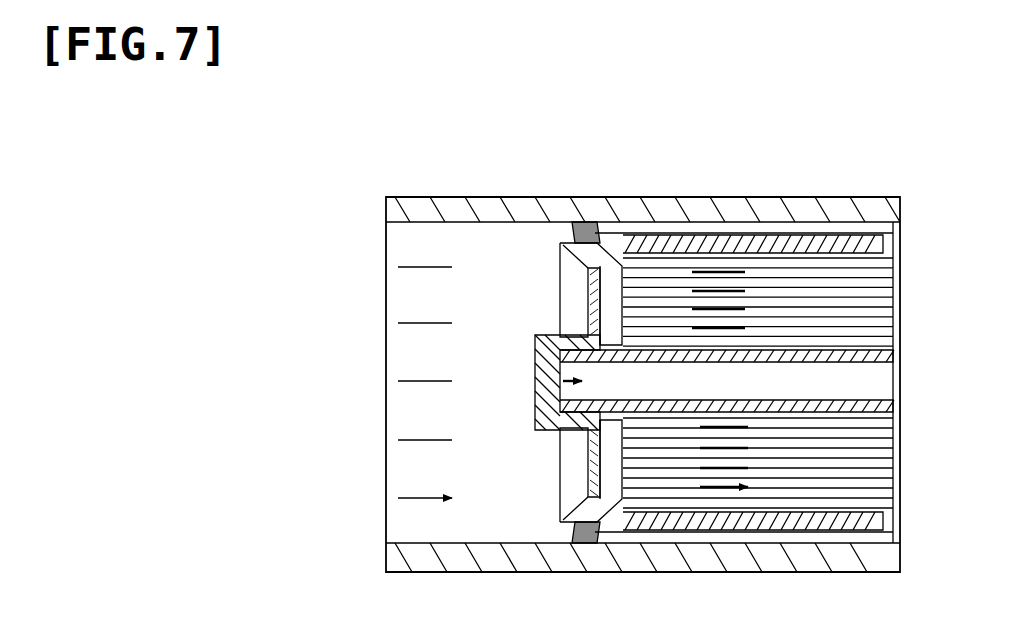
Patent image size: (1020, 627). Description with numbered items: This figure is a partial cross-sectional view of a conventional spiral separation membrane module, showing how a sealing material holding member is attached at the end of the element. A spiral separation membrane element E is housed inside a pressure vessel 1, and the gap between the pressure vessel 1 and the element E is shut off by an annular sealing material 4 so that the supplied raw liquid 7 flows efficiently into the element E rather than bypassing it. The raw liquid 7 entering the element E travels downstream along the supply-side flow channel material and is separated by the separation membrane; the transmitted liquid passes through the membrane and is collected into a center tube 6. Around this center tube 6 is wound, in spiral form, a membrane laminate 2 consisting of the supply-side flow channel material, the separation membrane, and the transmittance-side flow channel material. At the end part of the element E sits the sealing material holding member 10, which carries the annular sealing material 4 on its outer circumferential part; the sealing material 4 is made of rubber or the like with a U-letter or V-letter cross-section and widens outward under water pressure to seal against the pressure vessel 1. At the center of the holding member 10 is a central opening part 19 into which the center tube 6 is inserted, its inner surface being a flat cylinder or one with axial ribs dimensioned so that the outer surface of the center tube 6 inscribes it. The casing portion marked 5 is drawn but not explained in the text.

The pressure vessel 1 is at (487, 198).
The membrane laminate 2 is at (880, 290).
The annular sealing material 4 is at (602, 221).
The casing 5 is at (822, 234).
The center tube 6 is at (867, 362).
The raw liquid 7 is at (423, 267).
The sealing material holding member 10 is at (628, 243).
The central opening part 19 is at (536, 366).
The spiral separation membrane element E is at (708, 234).